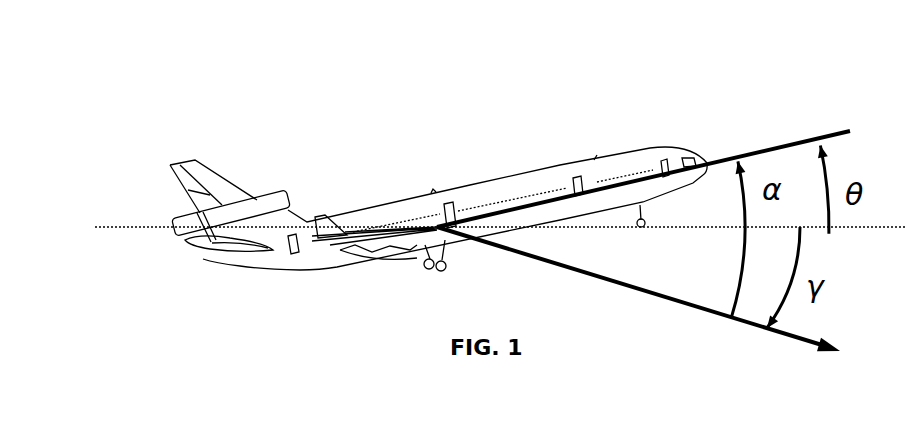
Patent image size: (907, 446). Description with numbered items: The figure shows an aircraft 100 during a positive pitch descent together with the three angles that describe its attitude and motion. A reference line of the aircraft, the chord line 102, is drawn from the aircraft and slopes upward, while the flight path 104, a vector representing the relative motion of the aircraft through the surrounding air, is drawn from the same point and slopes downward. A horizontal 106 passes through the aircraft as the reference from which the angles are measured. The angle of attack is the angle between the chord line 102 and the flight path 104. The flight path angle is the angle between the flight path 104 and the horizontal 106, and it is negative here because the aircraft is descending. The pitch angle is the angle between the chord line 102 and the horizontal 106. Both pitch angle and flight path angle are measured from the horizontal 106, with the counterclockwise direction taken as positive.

The aircraft 100 is at (106, 143).
The chord line 102 is at (788, 147).
The flight path 104 is at (708, 313).
The horizontal 106 is at (903, 248).